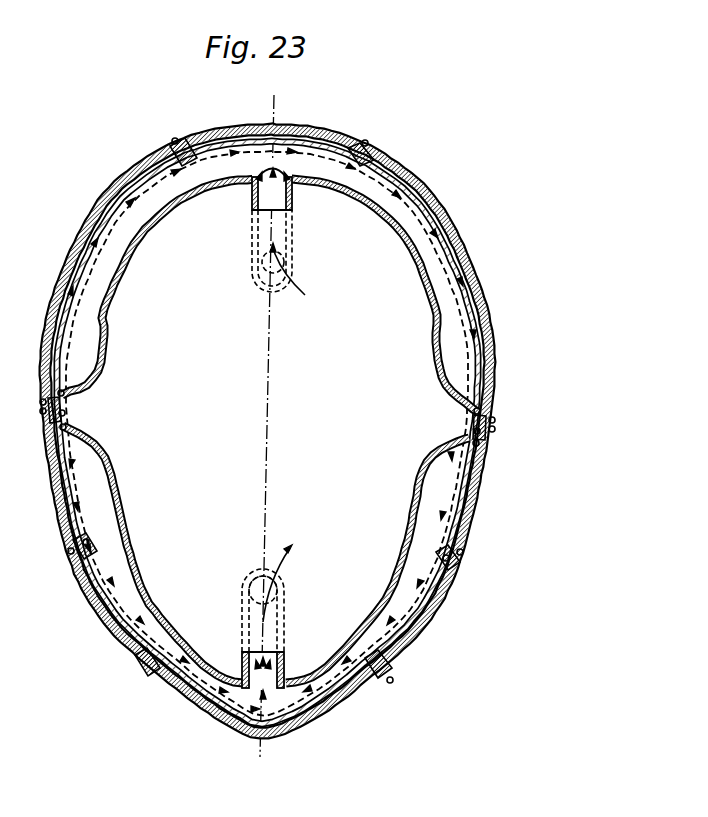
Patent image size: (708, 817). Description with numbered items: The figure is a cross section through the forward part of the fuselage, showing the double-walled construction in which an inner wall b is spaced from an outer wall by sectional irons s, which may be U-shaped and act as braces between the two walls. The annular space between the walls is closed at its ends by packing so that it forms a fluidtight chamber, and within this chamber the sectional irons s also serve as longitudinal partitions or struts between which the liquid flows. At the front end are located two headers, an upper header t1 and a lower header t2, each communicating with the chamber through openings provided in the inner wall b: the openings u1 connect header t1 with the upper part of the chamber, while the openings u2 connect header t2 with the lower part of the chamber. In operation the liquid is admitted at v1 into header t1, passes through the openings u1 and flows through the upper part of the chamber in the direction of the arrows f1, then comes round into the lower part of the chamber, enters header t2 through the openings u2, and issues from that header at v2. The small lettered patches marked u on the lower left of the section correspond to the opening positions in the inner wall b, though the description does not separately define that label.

The arrows f1 is at (93, 222).
The inner wall b is at (68, 334).
The sectional irons s is at (388, 160).
The lower left patch u is at (140, 677).
The openings u1 is at (148, 160).
The openings u2 is at (367, 700).
The header t1 is at (177, 190).
The header t2 is at (190, 642).
The liquid inlet v1 is at (258, 206).
The liquid outlet v2 is at (278, 660).